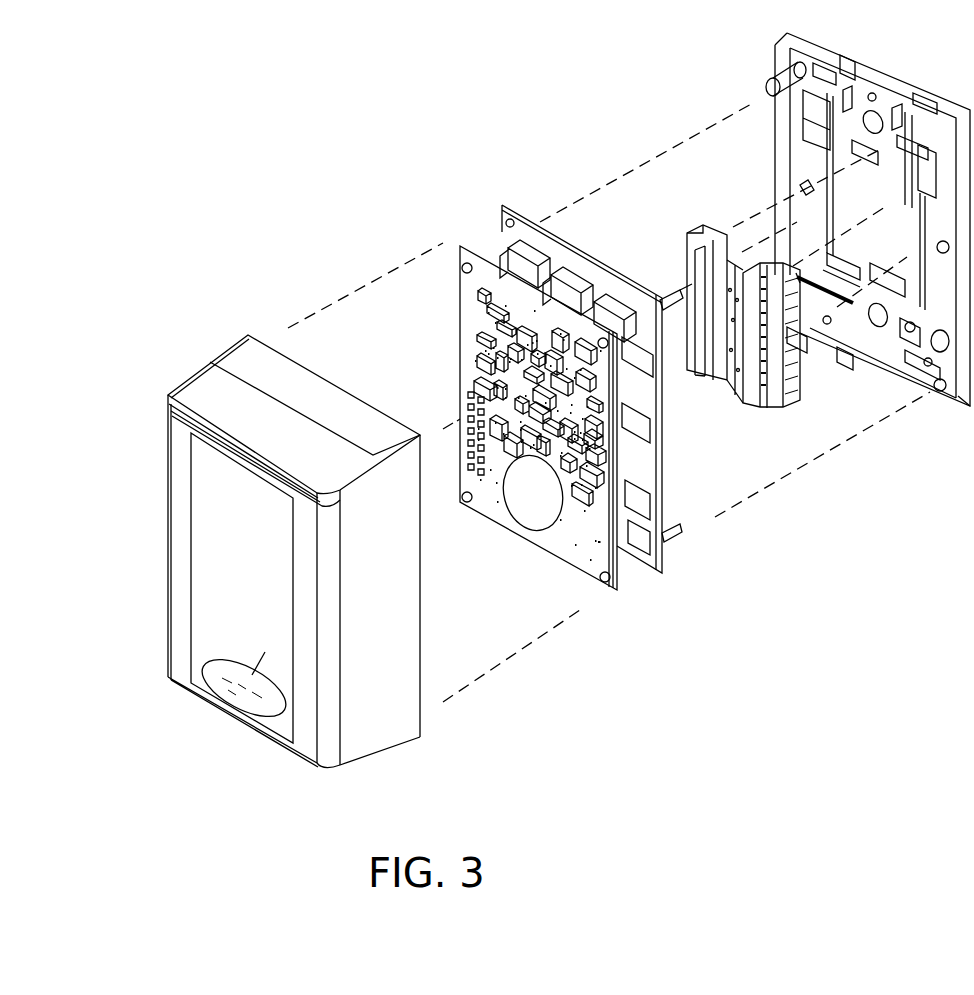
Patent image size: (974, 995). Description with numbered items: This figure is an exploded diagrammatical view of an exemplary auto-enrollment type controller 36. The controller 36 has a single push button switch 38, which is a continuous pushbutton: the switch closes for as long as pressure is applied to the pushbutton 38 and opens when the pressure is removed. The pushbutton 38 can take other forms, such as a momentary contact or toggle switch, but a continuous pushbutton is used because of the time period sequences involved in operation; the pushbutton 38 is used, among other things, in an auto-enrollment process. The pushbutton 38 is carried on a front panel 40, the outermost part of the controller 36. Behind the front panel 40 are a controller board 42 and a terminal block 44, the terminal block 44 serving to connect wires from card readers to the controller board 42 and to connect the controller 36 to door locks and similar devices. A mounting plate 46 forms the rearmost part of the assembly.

The auto-enrollment type controller 36 is at (432, 187).
The single push button switch 38 is at (245, 690).
The front panel 40 is at (207, 448).
The controller board 42 is at (493, 527).
The terminal block 44 is at (697, 378).
The mounting plate 46 is at (768, 53).